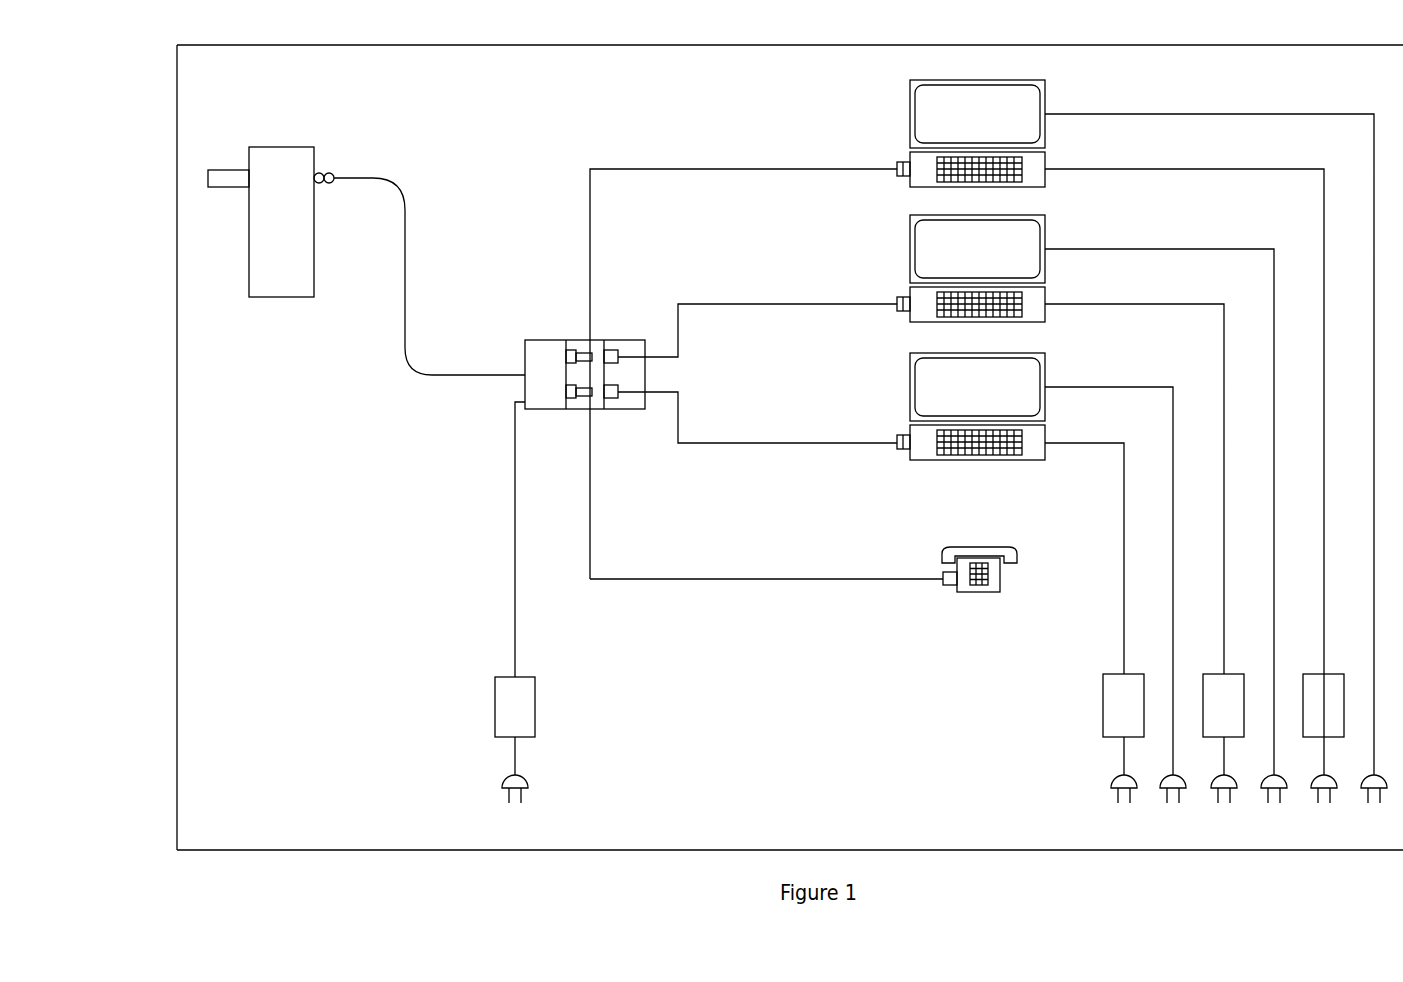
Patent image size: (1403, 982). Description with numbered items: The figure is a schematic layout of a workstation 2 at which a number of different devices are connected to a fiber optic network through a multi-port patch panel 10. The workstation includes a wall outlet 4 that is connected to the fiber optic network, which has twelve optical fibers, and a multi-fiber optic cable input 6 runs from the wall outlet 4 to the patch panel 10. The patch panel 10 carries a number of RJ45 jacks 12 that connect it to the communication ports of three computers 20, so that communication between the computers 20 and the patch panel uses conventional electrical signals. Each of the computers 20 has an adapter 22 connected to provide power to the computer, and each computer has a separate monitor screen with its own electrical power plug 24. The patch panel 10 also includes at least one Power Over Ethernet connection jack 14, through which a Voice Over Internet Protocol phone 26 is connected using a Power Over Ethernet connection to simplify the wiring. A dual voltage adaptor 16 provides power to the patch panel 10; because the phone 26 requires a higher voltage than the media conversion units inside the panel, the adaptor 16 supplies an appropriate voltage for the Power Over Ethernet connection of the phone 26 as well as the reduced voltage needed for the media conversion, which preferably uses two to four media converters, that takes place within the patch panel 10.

The workstation 2 is at (790, 447).
The wall outlet 4 is at (296, 198).
The multi-fiber optic cable input 6 is at (419, 274).
The multi-port patch panel 10 is at (525, 354).
The RJ45 jacks 12 is at (629, 379).
The Power Over Ethernet connection jack 14 is at (504, 539).
The dual voltage adaptor 16 is at (560, 734).
The computers 20 is at (989, 269).
The adapters 22 is at (1183, 684).
The electrical power plug 24 is at (1250, 811).
The Voice Over Internet Protocol phone 26 is at (922, 585).